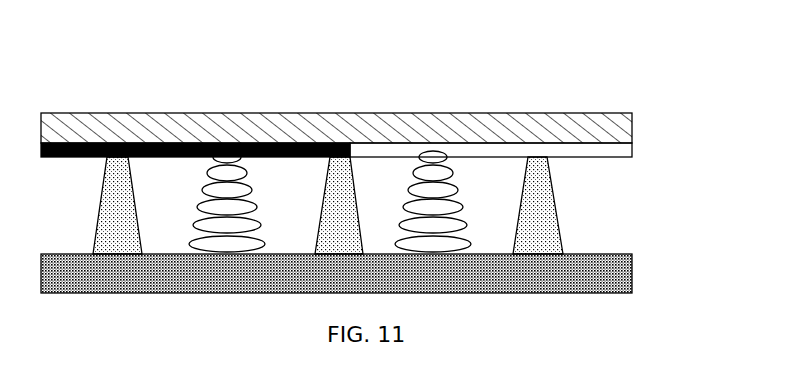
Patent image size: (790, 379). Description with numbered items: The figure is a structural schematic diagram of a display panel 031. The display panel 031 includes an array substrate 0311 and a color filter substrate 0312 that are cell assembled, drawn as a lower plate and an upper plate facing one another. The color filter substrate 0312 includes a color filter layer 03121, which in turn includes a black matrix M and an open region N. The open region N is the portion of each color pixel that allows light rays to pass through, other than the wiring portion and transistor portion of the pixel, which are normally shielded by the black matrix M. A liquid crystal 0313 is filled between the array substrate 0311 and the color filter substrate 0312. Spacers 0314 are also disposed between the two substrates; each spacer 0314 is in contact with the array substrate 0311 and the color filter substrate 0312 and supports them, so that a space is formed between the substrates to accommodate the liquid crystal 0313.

The display panel 031 is at (88, 36).
The array substrate 0311 is at (632, 278).
The color filter substrate 0312 is at (632, 130).
The color filter layer 03121 is at (458, 80).
The black matrix M is at (334, 142).
The open region N is at (474, 150).
The liquid crystal 0313 is at (293, 214).
The spacer 0314 is at (163, 203).